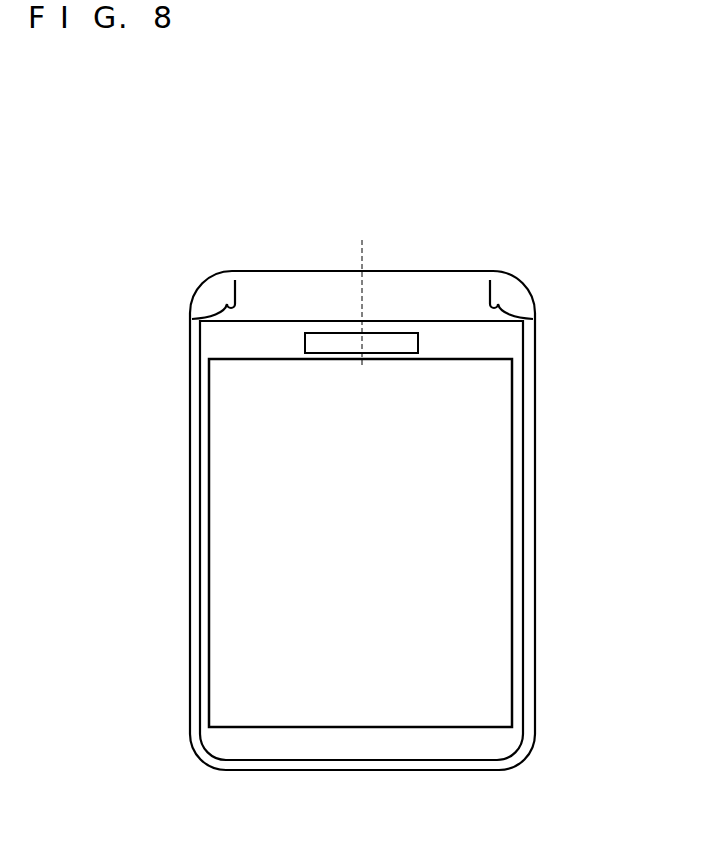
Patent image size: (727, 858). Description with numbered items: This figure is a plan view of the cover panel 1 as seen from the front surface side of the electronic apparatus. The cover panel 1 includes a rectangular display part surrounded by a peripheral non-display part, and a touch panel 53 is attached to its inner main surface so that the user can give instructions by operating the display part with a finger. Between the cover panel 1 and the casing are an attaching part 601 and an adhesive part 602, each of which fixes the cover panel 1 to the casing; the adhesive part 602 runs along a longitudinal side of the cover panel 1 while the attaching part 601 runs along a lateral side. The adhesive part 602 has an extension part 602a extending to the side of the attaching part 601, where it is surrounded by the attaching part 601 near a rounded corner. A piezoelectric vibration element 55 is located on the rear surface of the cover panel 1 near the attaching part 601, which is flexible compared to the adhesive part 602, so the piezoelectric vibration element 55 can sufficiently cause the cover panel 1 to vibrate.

The cover panel 1 is at (415, 172).
The touch panel 53 is at (492, 650).
The piezoelectric vibration element 55 is at (342, 342).
The attaching part 601 is at (395, 300).
The adhesive part 602 is at (530, 480).
The extension part 602a is at (232, 283).